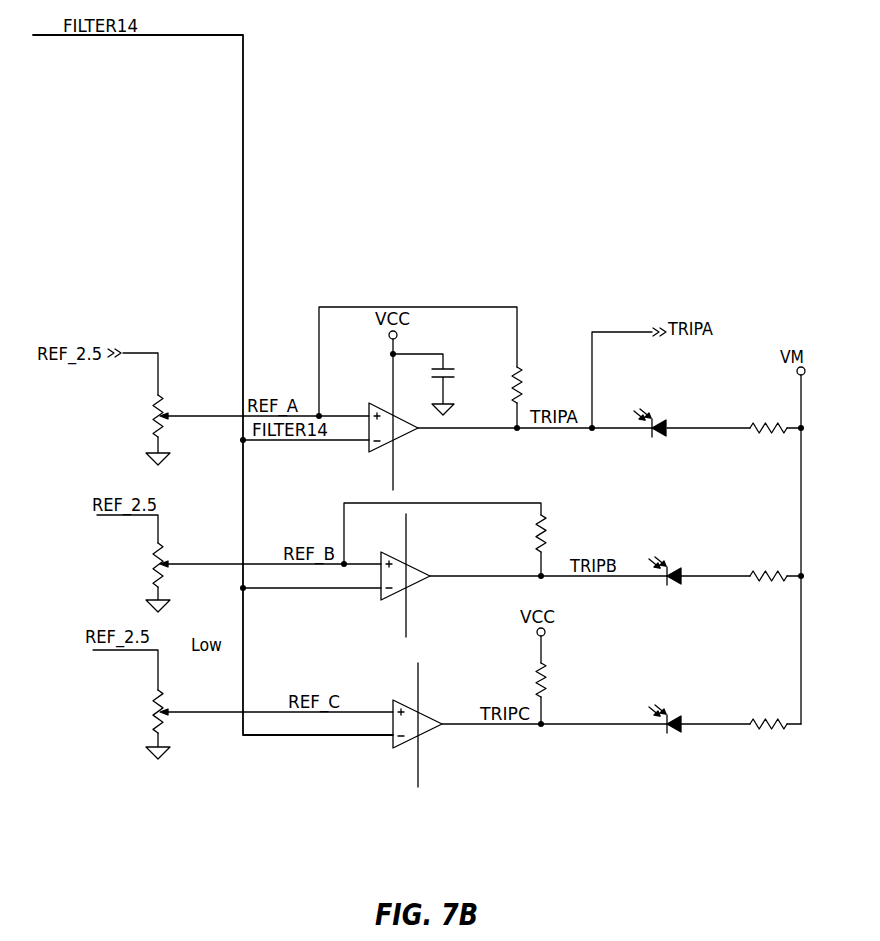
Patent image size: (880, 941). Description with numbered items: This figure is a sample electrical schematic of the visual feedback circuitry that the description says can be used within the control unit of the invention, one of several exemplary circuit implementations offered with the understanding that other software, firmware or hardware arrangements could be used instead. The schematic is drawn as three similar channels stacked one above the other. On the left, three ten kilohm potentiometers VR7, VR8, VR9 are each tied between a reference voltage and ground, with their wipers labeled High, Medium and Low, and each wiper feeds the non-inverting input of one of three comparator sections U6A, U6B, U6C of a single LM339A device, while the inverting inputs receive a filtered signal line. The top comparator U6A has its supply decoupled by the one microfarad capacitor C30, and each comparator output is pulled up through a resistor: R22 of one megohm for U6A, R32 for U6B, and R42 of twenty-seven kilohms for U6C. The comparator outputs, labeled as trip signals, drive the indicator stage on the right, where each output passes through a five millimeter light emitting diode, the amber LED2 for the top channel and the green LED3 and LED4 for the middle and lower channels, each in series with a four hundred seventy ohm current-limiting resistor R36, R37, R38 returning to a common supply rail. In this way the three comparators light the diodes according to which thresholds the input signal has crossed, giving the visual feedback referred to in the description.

The 10 Kohm potentiometer (High threshold) VR7 is at (166, 414).
The 10 Kohm potentiometer (Medium threshold) VR8 is at (166, 563).
The 10 Kohm potentiometer (Low threshold) VR9 is at (166, 710).
The LM339A comparator A U6A is at (405, 414).
The LM339A comparator B U6B is at (420, 575).
The LM339A comparator C U6C is at (433, 723).
The 1uF capacitor C30 is at (441, 384).
The 1M resistor R22 is at (531, 395).
The resistor NS R32 is at (555, 545).
The 27K resistor R42 is at (557, 680).
The 470 ohm resistor R36 is at (768, 427).
The 470 ohm resistor R37 is at (767, 574).
The 470 ohm resistor R38 is at (767, 721).
The 5mm Amber LED LED2 is at (679, 429).
The 5mm Green LED LED3 is at (687, 577).
The 5mm Green LED LED4 is at (684, 720).